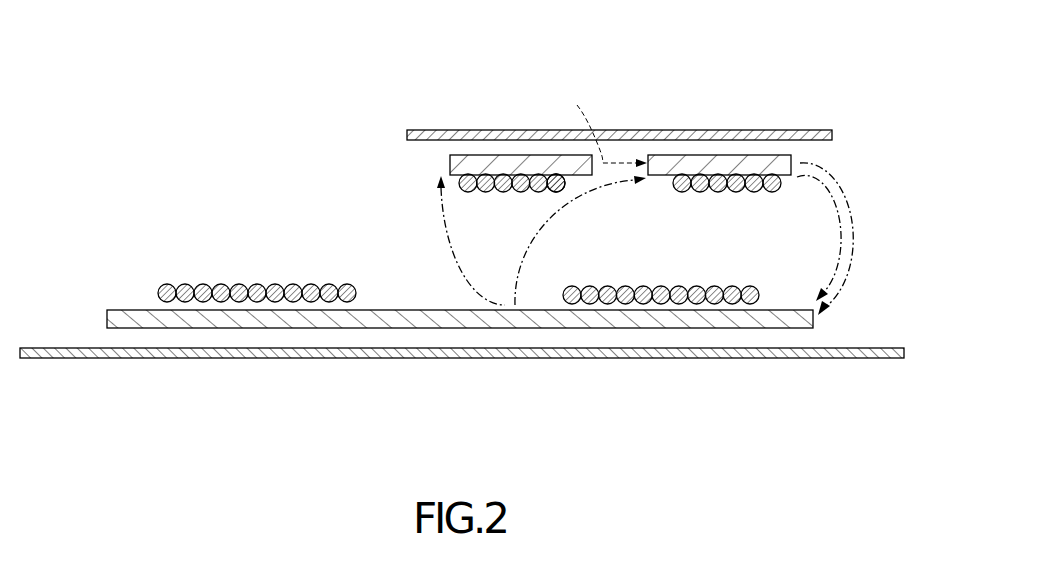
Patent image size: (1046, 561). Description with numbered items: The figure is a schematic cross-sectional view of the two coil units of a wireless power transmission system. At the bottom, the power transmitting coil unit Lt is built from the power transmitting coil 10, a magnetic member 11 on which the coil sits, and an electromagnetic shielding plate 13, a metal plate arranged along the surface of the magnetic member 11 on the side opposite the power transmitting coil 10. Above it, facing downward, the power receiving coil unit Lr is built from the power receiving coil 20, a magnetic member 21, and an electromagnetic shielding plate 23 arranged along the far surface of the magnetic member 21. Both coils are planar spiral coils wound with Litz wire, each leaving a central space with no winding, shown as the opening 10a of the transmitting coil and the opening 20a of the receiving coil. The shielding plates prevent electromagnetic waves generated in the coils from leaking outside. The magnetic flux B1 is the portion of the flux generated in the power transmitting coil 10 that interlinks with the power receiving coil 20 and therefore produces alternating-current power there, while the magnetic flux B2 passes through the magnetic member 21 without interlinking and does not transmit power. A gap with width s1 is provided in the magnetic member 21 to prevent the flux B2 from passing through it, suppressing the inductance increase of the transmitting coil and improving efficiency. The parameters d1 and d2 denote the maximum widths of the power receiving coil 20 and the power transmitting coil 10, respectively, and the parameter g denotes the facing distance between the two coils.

The power transmitting coil 10 is at (604, 303).
The opening 10a is at (354, 296).
The magnetic member 11 is at (676, 321).
The electromagnetic shielding plate 13 is at (755, 358).
The power receiving coil 20 is at (779, 176).
The opening 20a is at (563, 186).
The magnetic member 21 is at (738, 162).
The electromagnetic shielding plate 23 is at (683, 131).
The power receiving coil unit Lr is at (663, 62).
The power transmitting coil unit Lt is at (780, 412).
The magnetic flux B1 is at (520, 238).
The magnetic flux B2 is at (438, 211).
The maximum width of the power receiving coil d1 is at (458, 178).
The maximum width of the power transmitting coil d2 is at (762, 288).
The facing distance g is at (667, 202).
The width of the gap s1 is at (648, 155).